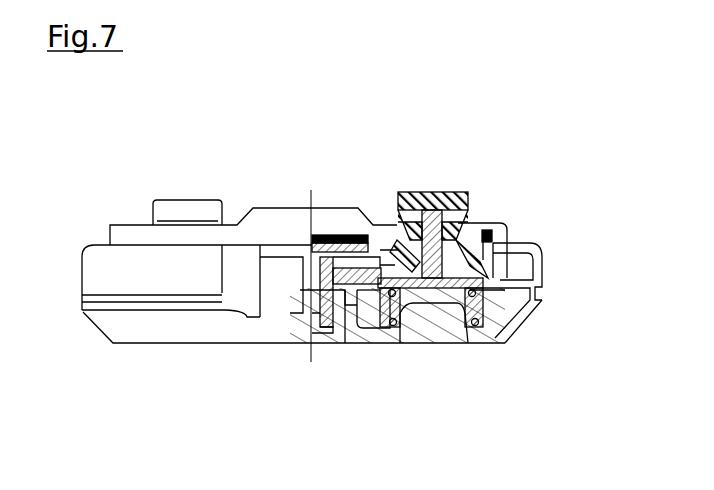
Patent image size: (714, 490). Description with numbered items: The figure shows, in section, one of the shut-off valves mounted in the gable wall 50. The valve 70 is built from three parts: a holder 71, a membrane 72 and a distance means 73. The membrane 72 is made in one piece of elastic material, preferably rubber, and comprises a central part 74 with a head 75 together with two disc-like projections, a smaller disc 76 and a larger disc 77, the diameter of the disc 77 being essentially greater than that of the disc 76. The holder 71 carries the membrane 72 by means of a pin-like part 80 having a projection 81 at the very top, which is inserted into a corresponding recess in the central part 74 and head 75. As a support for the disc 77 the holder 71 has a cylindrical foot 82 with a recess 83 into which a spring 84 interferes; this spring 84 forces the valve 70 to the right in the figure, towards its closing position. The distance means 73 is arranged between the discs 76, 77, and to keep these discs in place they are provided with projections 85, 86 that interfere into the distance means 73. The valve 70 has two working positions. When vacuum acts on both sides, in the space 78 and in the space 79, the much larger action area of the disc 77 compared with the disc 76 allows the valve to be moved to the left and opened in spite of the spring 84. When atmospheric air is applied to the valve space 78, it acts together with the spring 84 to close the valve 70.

The gable wall 50 is at (562, 209).
The valve 70 is at (190, 203).
The holder 71 is at (505, 293).
The membrane 72 is at (468, 198).
The distance means 73 is at (528, 268).
The central part 74 is at (408, 238).
The head 75 is at (407, 203).
The disc-like projection 76 is at (365, 248).
The disc-like projection 77 is at (333, 258).
The space 78 is at (368, 312).
The space 79 is at (485, 229).
The pin-like part 80 is at (423, 207).
The projection 81 is at (447, 191).
The cylindrical foot 82 is at (472, 326).
The recess 83 is at (438, 306).
The spring 84 is at (405, 322).
The projection 85 is at (362, 300).
The projection 86 is at (312, 322).